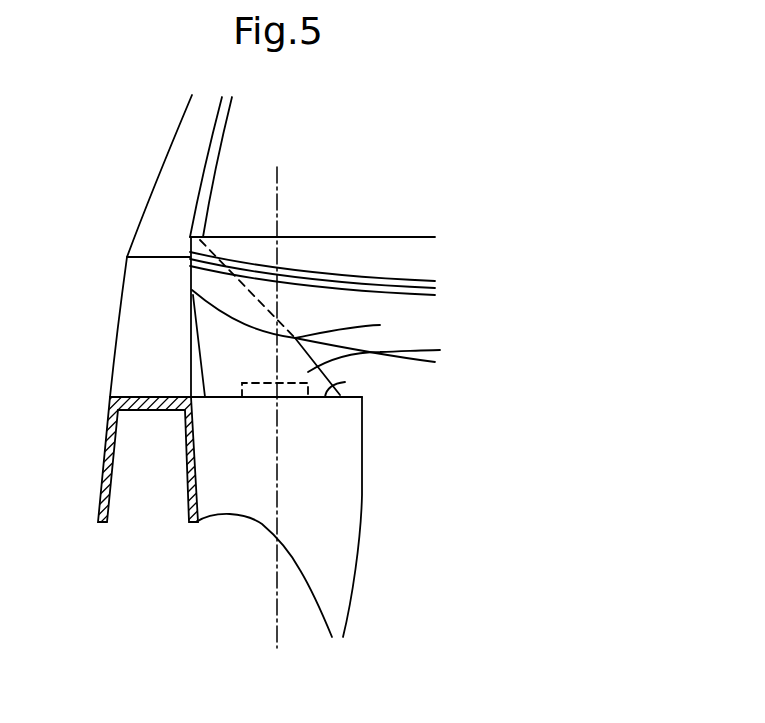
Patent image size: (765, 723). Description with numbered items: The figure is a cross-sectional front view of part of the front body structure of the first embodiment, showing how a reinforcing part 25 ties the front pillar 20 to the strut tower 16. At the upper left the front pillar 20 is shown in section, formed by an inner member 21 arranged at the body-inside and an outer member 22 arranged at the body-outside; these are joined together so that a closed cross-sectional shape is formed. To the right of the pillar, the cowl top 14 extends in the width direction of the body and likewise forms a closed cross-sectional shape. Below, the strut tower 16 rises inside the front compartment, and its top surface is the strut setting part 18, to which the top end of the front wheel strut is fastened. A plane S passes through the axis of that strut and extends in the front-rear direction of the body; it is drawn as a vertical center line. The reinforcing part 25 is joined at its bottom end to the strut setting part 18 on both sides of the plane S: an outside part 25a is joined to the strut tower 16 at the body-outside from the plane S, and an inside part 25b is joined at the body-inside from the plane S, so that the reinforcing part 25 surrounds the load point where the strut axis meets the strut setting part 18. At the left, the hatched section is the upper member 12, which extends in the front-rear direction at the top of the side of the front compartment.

The front pillar 20 is at (203, 236).
The outer member 22 is at (166, 198).
The inner member 21 is at (217, 147).
The cowl top 14 is at (390, 252).
The reinforcing part 25 is at (275, 324).
The outside part 25a is at (215, 323).
The inside part 25b is at (440, 350).
The strut setting part 18 is at (345, 382).
The strut tower 16 is at (327, 513).
The upper member 12 is at (137, 371).
The plane S is at (280, 183).